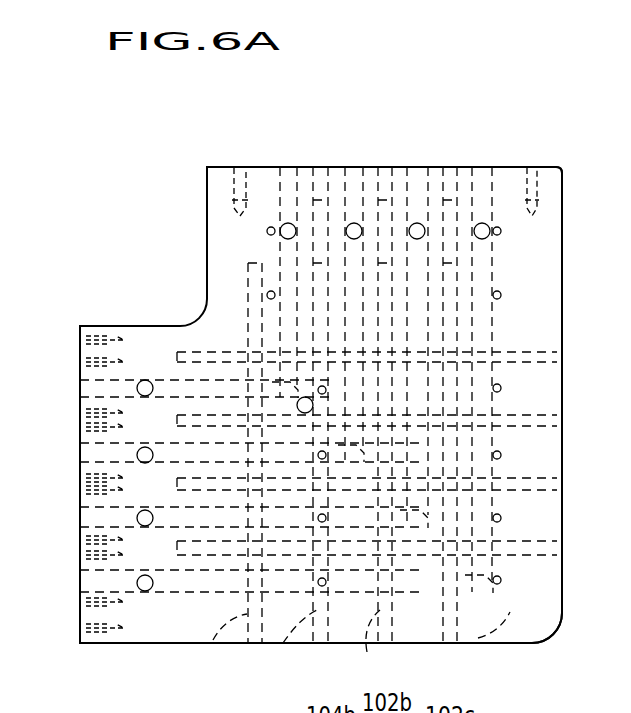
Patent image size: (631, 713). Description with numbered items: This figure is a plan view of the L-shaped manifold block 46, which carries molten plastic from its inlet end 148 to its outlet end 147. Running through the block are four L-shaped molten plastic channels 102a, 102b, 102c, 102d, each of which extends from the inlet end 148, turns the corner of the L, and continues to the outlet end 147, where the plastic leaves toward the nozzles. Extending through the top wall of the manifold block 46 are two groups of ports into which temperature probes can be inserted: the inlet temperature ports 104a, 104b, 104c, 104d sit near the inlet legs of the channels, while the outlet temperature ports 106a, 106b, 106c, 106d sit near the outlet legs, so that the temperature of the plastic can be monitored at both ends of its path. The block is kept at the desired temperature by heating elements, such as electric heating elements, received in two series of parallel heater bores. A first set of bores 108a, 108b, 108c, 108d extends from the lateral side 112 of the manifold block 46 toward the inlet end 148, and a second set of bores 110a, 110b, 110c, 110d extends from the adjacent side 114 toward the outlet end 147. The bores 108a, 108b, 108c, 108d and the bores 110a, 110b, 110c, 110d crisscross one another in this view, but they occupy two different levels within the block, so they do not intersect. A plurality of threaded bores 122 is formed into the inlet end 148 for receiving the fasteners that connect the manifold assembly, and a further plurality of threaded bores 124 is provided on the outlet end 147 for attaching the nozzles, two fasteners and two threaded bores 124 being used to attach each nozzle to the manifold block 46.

The manifold block 46 is at (564, 290).
The molten plastic channel 102a is at (280, 267).
The molten plastic channel 102b is at (392, 215).
The molten plastic channel 102c is at (452, 215).
The molten plastic channel 102d is at (500, 212).
The inlet temperature port 104a is at (287, 223).
The inlet temperature port 104b is at (353, 223).
The inlet temperature port 104c is at (418, 223).
The inlet temperature port 104d is at (483, 223).
The outlet temperature port 106a is at (145, 380).
The outlet temperature port 106b is at (139, 448).
The outlet temperature port 106c is at (139, 511).
The outlet temperature port 106d is at (139, 576).
The heater bore 108a is at (217, 645).
The heater bore 108b is at (291, 643).
The heater bore 108c is at (394, 643).
The heater bore 108d is at (511, 644).
The heater bore 110a is at (538, 552).
The heater bore 110b is at (538, 490).
The heater bore 110c is at (538, 422).
The heater bore 110d is at (538, 350).
The lateral side 112 is at (475, 648).
The adjacent side 114 is at (565, 612).
The threaded bore 122 is at (233, 195).
The threaded bore 124 is at (84, 340).
The outlet end 147 is at (80, 645).
The inlet end 148 is at (563, 168).